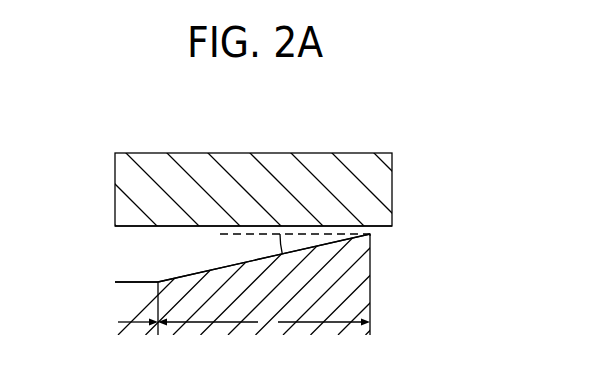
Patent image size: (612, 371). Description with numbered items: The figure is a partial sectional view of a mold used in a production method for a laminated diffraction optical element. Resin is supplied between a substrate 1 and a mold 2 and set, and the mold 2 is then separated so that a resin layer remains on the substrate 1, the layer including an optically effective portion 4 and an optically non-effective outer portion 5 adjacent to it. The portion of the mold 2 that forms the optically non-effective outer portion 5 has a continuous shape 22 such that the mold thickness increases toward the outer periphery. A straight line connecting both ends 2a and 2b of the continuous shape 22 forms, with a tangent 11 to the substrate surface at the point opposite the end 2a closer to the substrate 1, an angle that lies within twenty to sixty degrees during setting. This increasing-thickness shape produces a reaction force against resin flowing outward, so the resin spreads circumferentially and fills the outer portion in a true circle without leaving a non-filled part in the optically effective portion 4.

The substrate 1 is at (261, 164).
The tangent 11 is at (318, 231).
The mold 2 is at (353, 270).
The end of continuous shape 2a is at (371, 234).
The end of continuous shape 2b is at (157, 281).
The continuous shape 22 is at (239, 263).
The optically effective portion 4 is at (127, 322).
The optically non-effective outer portion 5 is at (264, 322).